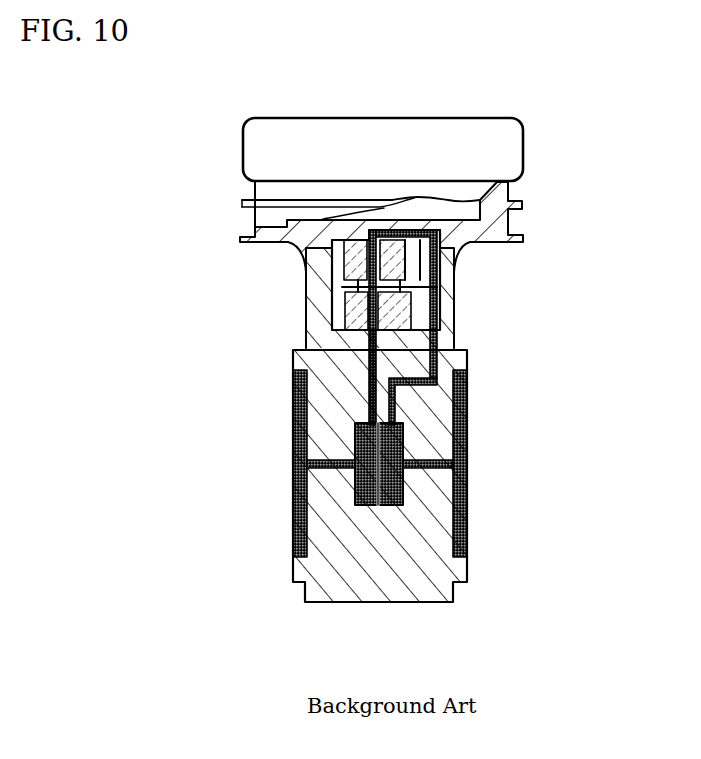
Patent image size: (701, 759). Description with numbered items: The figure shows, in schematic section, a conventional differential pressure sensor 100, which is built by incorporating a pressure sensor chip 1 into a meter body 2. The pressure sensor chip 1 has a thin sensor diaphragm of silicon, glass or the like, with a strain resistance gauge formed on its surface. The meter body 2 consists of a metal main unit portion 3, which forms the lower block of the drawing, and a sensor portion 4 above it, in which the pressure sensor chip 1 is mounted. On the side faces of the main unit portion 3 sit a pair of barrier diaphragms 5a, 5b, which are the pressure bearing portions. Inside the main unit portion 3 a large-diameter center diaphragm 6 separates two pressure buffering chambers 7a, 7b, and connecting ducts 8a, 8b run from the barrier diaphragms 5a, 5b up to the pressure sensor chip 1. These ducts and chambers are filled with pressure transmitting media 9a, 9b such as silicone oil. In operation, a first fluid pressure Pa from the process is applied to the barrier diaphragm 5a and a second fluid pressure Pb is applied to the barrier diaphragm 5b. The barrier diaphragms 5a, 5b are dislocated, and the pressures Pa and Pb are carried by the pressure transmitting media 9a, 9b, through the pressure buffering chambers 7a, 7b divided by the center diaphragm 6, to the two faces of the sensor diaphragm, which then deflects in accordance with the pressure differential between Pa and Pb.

The differential pressure sensor 100 is at (388, 340).
The pressure sensor chip 1 is at (447, 281).
The meter body 2 is at (512, 222).
The main unit portion 3 is at (420, 570).
The sensor portion 4 is at (308, 264).
The barrier diaphragm 5a is at (292, 410).
The barrier diaphragm 5b is at (468, 402).
The center diaphragm 6 is at (380, 445).
The pressure buffering chamber 7a is at (367, 487).
The pressure buffering chamber 7b is at (390, 492).
The connecting duct 8a is at (366, 346).
The connecting duct 8b is at (465, 354).
The pressure transmitting medium 9a is at (372, 310).
The pressure transmitting medium 9b is at (450, 311).
The first fluid pressure Pa is at (290, 463).
The second fluid pressure Pb is at (472, 463).